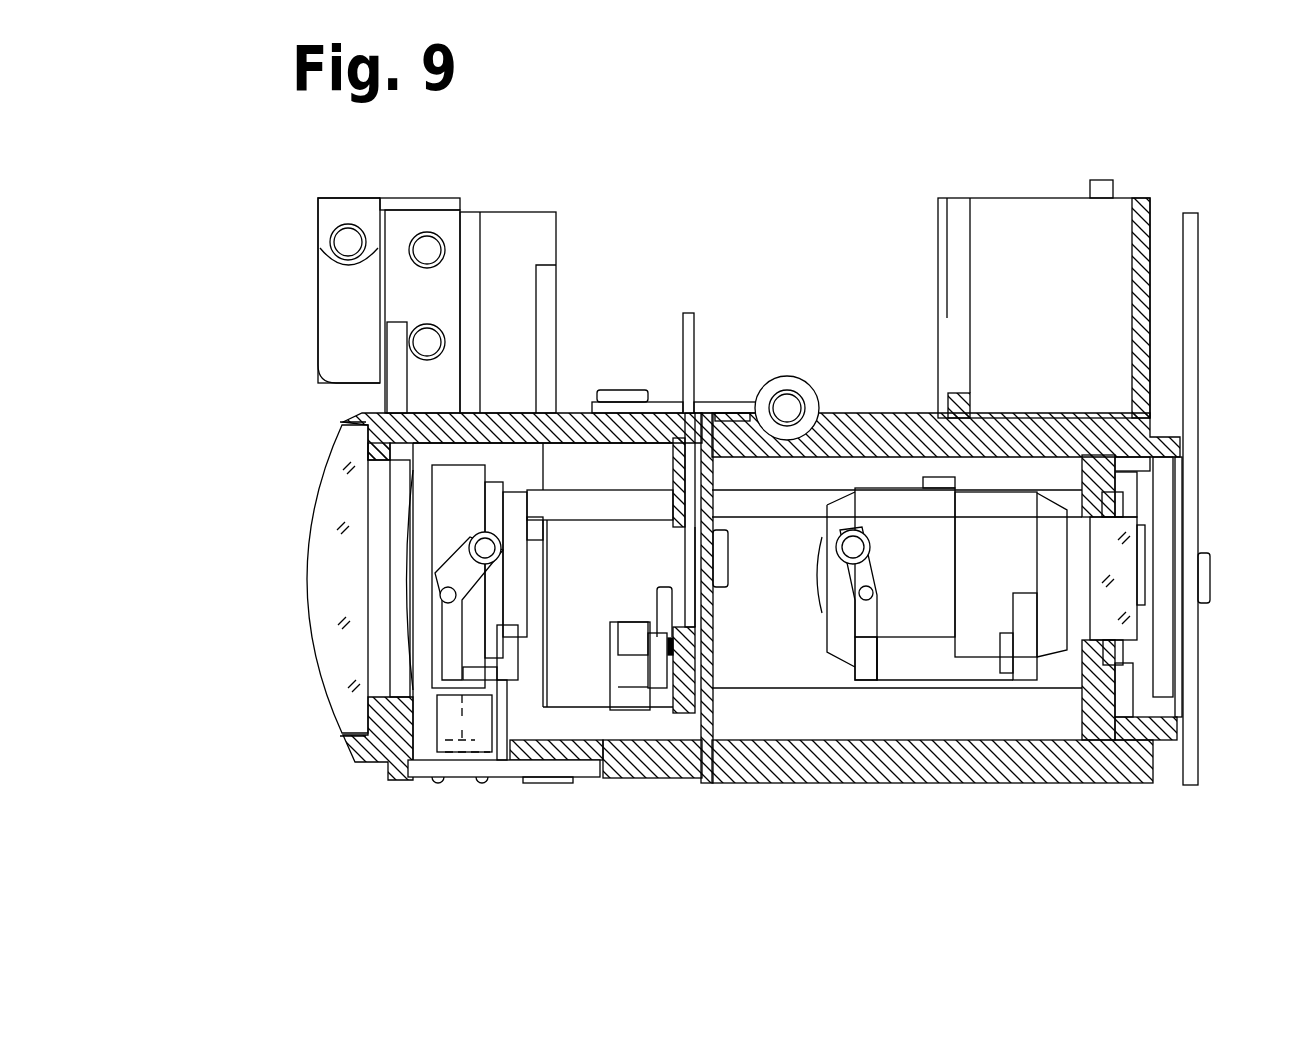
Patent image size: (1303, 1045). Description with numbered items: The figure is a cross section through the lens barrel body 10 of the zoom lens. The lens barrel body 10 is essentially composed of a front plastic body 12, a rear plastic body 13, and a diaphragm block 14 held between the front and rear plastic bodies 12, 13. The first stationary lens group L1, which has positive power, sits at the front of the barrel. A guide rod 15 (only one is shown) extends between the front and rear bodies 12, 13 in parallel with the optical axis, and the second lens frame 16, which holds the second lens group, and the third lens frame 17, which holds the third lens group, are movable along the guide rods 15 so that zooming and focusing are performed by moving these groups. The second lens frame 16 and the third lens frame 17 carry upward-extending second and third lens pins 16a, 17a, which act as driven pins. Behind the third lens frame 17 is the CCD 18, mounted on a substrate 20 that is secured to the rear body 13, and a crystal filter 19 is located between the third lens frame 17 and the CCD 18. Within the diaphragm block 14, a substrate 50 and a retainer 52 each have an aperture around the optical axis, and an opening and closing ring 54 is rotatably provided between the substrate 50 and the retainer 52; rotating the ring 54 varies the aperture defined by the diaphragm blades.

The lens barrel body 10 is at (240, 293).
The front plastic body 12 is at (680, 772).
The rear plastic body 13 is at (895, 763).
The diaphragm block 14 is at (707, 773).
The guide rods 15 is at (581, 505).
The second lens frame 16 is at (452, 490).
The second lens pin 16a is at (470, 542).
The third lens frame 17 is at (905, 505).
The third lens pin 17a is at (860, 547).
The CCD 18 is at (1163, 547).
The crystal filter 19 is at (1128, 530).
The substrate 20 is at (1193, 742).
The substrate 50 is at (710, 703).
The retainer 52 is at (680, 713).
The opening and closing ring 54 is at (688, 378).
The first stationary lens group L1 is at (334, 653).